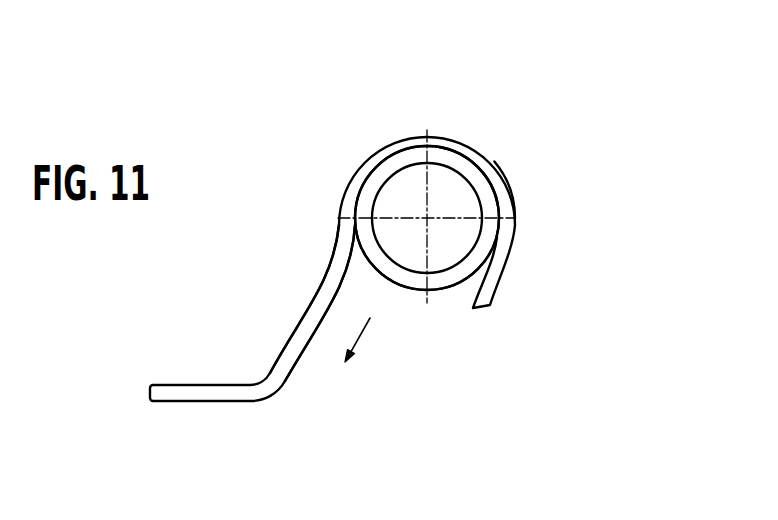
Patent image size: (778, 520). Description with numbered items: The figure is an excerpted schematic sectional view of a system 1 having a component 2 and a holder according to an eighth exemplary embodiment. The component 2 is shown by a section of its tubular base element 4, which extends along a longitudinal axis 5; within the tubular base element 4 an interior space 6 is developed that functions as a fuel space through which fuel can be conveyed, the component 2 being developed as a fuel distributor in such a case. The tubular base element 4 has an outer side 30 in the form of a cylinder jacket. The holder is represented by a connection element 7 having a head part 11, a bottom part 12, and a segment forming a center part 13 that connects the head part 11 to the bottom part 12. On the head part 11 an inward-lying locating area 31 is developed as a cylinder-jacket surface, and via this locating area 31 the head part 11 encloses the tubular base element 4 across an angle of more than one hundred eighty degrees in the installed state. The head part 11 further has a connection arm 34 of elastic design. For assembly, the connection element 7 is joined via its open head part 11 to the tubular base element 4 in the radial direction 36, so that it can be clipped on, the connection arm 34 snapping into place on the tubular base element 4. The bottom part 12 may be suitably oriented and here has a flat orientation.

The system 1 is at (618, 82).
The component 2 is at (378, 180).
The tubular base element 4 is at (378, 180).
The longitudinal axis 5 is at (427, 220).
The interior space 6 is at (405, 188).
The connection element 7 is at (333, 266).
The head part 11 is at (463, 145).
The bottom part 12 is at (197, 393).
The center part 13 is at (297, 336).
The outer side 30 is at (444, 291).
The locating area 31 is at (471, 172).
The connection arm 34 is at (503, 239).
The radial direction 36 is at (360, 335).